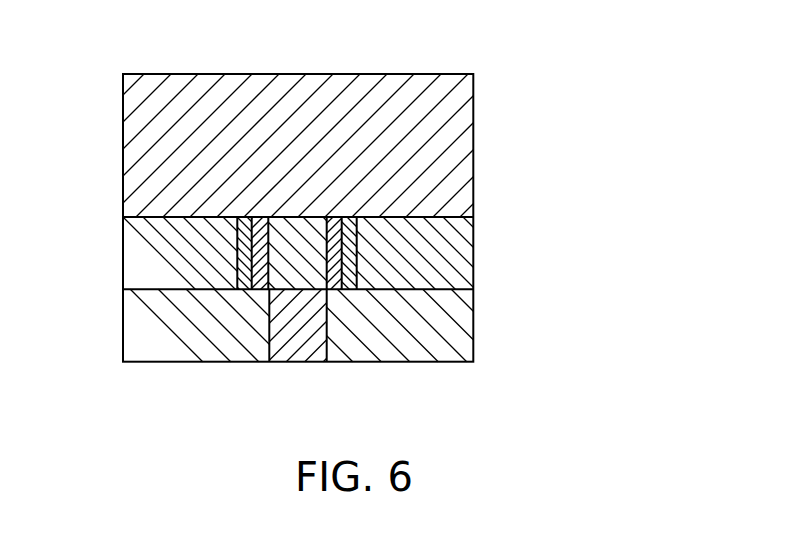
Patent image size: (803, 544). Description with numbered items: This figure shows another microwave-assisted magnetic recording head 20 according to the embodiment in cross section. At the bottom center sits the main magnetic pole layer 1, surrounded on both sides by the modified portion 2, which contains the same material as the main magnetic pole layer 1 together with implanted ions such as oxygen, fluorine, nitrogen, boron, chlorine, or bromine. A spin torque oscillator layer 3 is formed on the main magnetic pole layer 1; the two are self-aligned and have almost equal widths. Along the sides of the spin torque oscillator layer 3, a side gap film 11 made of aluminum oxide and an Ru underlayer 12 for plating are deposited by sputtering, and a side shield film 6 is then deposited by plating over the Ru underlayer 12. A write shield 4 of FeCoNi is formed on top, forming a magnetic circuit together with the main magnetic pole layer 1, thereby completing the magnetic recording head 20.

The magnetic recording head 20 is at (587, 80).
The write shield 4 is at (460, 155).
The side shield film 6 is at (463, 275).
The spin torque oscillator layer 3 is at (300, 246).
The Ru underlayer 12 is at (347, 240).
The modified portion 2 is at (462, 340).
The main magnetic pole layer 1 is at (297, 352).
The side gap film 11 is at (333, 288).